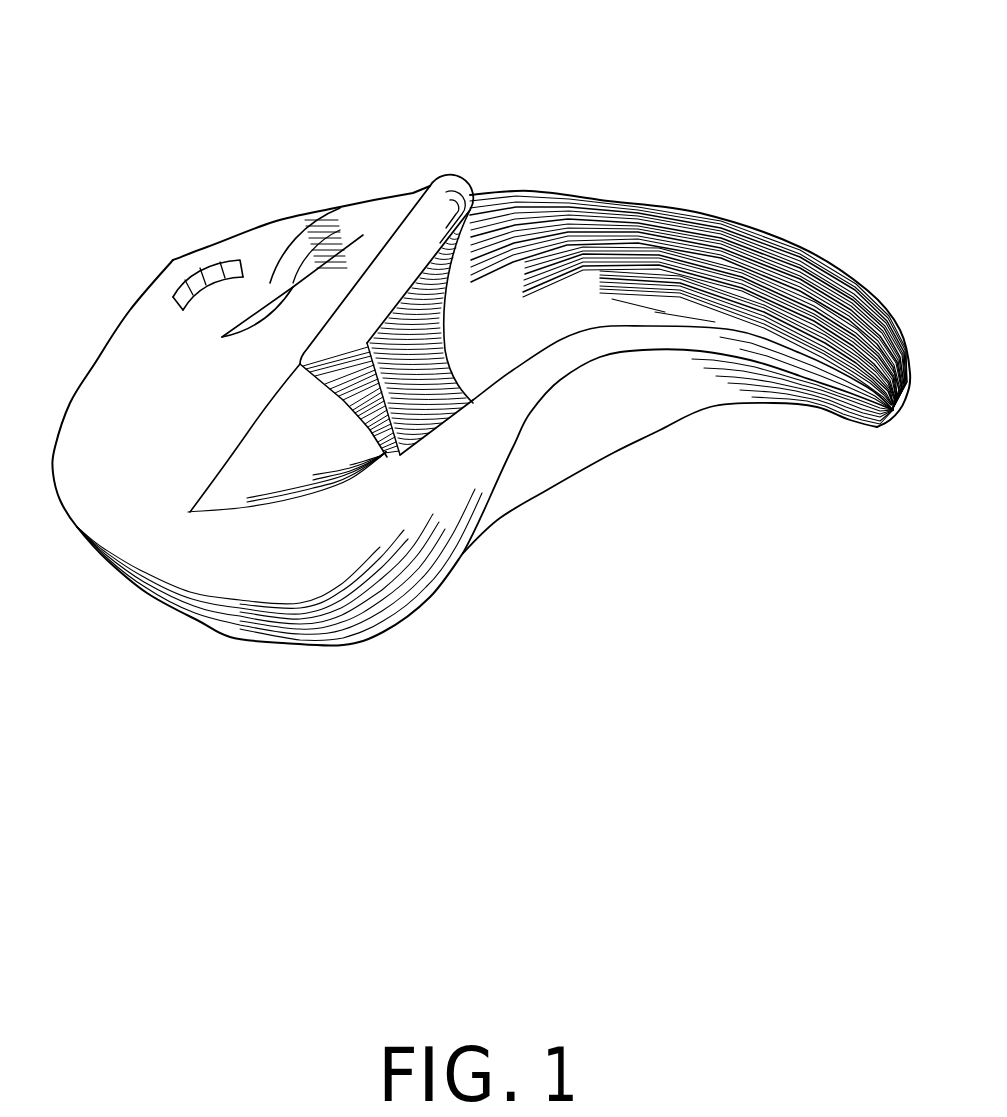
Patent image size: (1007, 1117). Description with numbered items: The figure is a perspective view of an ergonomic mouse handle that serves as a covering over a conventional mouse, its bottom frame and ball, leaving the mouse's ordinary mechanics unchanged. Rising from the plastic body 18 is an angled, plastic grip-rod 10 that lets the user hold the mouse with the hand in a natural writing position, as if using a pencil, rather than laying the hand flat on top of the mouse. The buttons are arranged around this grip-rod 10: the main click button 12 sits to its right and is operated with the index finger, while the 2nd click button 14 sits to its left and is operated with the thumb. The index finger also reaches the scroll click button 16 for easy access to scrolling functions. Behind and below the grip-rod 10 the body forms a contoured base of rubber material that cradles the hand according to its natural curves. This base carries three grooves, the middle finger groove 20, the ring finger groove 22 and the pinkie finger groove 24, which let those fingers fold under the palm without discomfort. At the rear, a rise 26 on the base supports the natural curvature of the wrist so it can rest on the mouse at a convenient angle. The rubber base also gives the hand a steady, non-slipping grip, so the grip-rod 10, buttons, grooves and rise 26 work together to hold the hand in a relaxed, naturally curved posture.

The grip-rod 10 is at (447, 190).
The main click button 12 is at (260, 307).
The 2nd click button 14 is at (288, 458).
The scroll click button 16 is at (203, 270).
The plastic body 18 is at (130, 527).
The middle finger groove 20 is at (393, 443).
The ring finger groove 22 is at (437, 407).
The pinkie finger groove 24 is at (510, 230).
The rise 26 is at (584, 315).